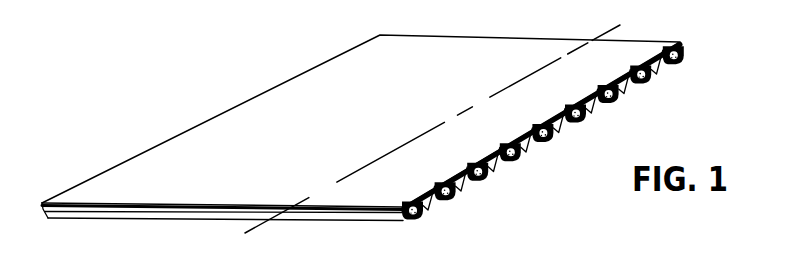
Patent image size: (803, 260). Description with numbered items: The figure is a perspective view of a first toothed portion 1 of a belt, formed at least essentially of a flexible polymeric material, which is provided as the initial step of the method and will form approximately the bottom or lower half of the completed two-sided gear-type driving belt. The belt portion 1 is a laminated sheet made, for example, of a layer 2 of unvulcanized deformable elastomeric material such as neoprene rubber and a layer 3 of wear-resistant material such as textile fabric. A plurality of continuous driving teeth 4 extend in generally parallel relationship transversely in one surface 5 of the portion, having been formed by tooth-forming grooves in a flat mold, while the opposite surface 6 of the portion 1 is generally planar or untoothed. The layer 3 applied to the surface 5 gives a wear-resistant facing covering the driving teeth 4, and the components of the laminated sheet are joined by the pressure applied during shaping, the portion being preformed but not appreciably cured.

The first toothed portion 1 is at (160, 140).
The layer of unvulcanized deformable elastomeric material 2 is at (277, 105).
The layer of wear-resistant material 3 is at (677, 59).
The driving teeth 4 is at (607, 103).
The surface 5 is at (498, 156).
The opposite surface 6 is at (333, 78).